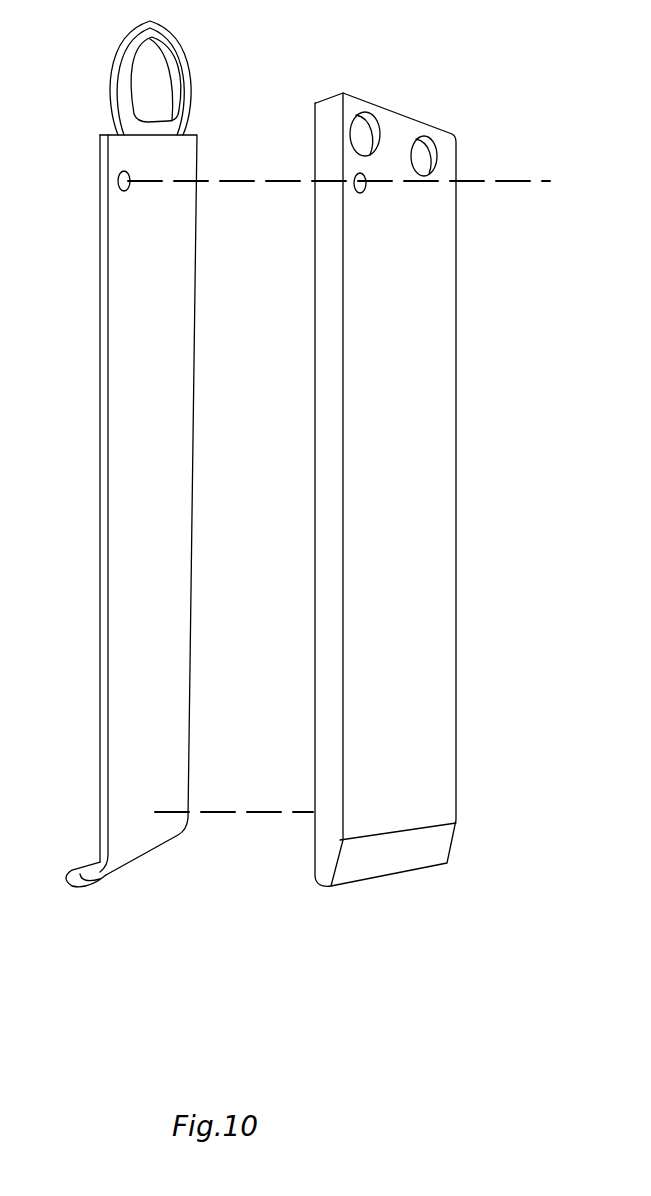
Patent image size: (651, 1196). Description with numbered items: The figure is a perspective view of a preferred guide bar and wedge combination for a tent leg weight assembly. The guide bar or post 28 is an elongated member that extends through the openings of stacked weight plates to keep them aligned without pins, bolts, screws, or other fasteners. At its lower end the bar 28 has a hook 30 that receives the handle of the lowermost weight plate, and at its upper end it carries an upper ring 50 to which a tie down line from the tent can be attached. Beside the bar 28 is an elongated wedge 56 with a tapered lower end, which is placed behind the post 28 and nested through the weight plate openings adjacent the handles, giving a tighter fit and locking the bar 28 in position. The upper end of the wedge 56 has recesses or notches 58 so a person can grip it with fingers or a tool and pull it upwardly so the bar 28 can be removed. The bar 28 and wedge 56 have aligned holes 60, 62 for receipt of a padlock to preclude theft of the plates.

The guide bar 28 is at (180, 458).
The hook 30 is at (92, 860).
The upper ring 50 is at (163, 32).
The elongated wedge 56 is at (436, 417).
The recesses or notches 58 is at (366, 132).
The hole 60 is at (365, 191).
The hole 62 is at (128, 190).